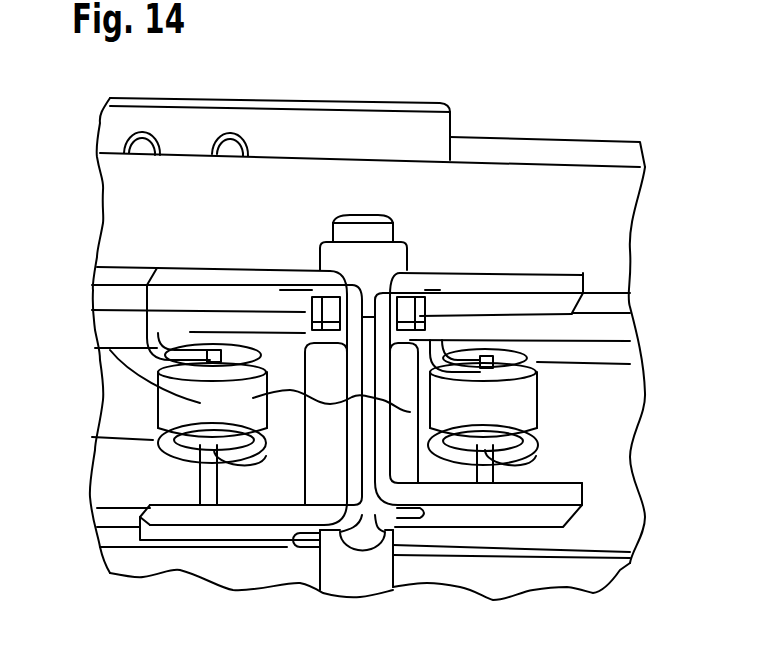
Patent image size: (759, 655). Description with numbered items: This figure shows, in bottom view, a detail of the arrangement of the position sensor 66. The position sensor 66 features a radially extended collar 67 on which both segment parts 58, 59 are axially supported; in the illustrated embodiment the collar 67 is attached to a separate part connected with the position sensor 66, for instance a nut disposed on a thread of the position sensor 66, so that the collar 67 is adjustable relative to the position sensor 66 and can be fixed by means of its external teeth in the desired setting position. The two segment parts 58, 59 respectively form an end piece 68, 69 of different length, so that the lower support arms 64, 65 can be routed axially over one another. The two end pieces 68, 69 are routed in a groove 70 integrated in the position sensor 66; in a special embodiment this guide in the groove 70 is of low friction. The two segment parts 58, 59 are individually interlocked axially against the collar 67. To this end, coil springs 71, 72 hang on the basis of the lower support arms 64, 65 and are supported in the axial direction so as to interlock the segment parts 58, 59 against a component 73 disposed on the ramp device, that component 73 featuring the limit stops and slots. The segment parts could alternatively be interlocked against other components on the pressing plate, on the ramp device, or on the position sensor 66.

The segment part 58 is at (214, 297).
The segment part 59 is at (490, 303).
The lower support arm 64 is at (123, 521).
The lower support arm 65 is at (500, 550).
The position sensor 66 is at (358, 570).
The collar 67 is at (368, 297).
The end piece 68 is at (203, 403).
The end piece 69 is at (410, 412).
The groove 70 is at (363, 477).
The coil spring 71 is at (203, 403).
The coil spring 72 is at (503, 403).
The component 73 is at (590, 333).